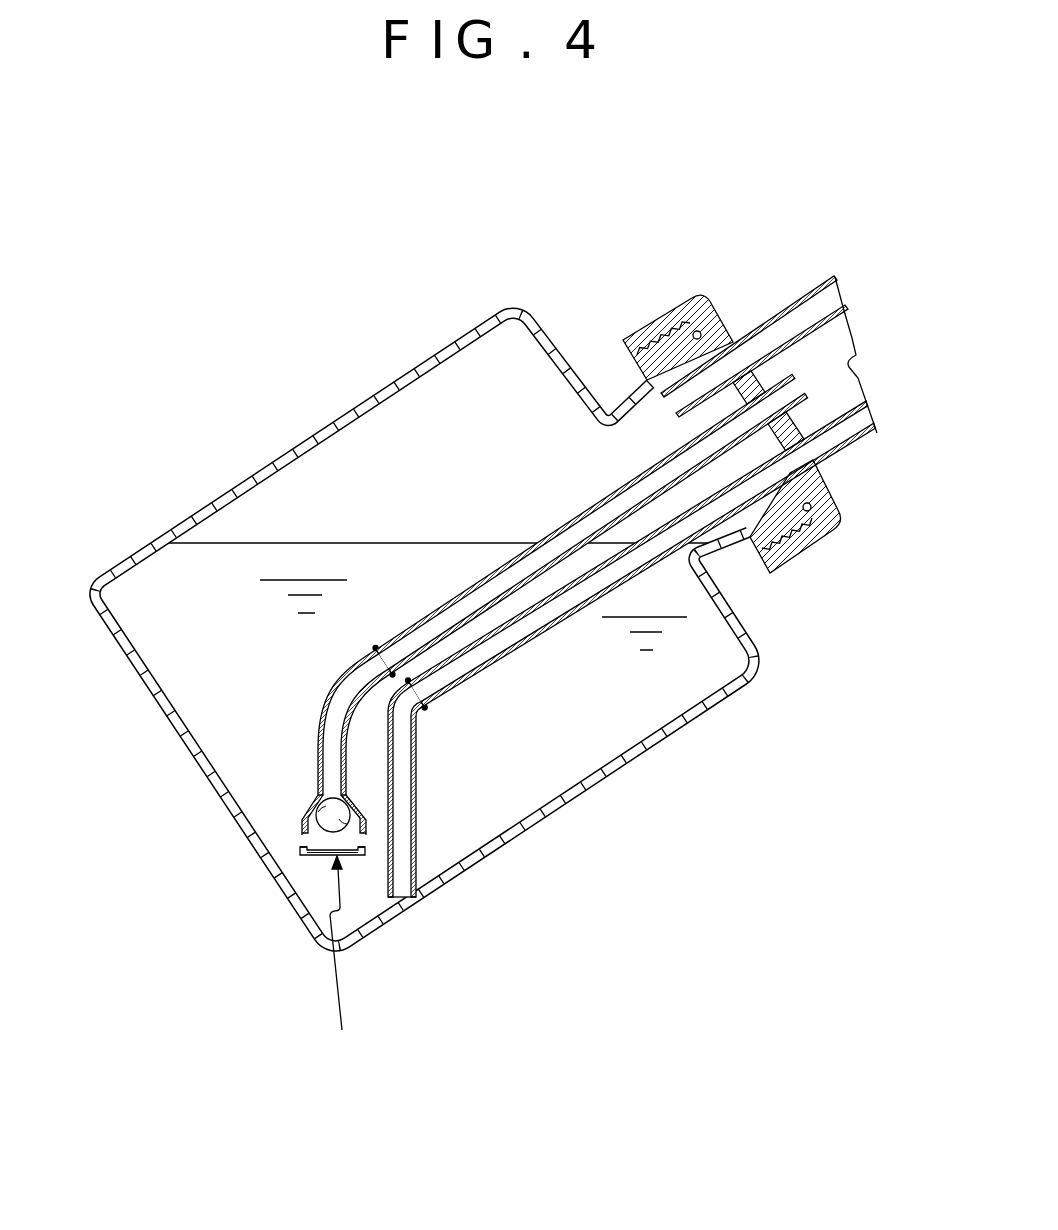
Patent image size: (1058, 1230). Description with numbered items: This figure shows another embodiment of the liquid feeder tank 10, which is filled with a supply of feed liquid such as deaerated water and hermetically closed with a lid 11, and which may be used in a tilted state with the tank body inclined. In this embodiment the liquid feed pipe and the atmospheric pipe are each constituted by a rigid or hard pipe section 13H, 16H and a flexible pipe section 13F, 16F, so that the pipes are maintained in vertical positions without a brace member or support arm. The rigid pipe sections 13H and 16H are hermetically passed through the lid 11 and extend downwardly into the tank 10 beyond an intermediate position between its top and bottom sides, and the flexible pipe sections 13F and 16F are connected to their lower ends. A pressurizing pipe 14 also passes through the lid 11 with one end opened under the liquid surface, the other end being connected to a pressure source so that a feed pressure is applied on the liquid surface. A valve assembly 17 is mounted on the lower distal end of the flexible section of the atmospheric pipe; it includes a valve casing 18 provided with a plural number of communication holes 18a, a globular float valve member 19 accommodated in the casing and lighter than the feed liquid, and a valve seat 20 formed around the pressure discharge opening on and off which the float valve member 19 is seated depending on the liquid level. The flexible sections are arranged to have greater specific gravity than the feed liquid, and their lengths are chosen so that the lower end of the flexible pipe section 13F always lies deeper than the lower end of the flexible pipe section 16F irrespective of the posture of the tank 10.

The liquid feeder tank 10 is at (367, 400).
The lid 11 is at (823, 533).
The flexible pipe section of liquid pipe 13F is at (417, 775).
The rigid pipe section of liquid pipe 13H is at (653, 560).
The pressurizing pipe 14 is at (780, 318).
The flexible pipe section of atmospheric pipe 16F is at (317, 718).
The rigid pipe section of atmospheric pipe 16H is at (497, 600).
The valve assembly 17 is at (345, 959).
The valve casing 18 is at (303, 856).
The communication holes 18a is at (300, 842).
The float valve member 19 is at (362, 830).
The valve seat 20 is at (302, 832).